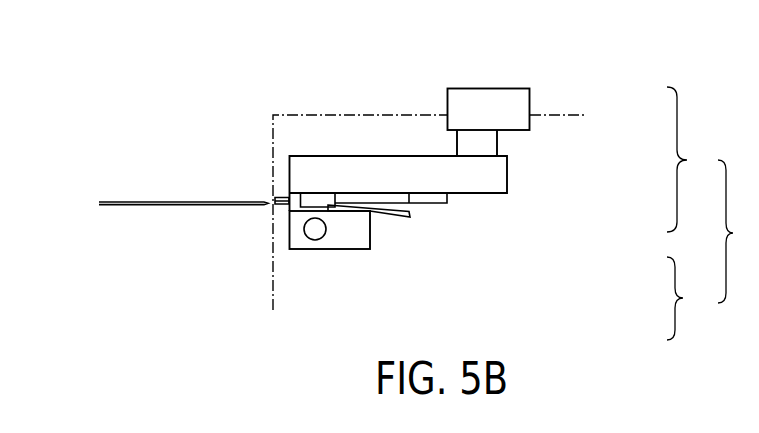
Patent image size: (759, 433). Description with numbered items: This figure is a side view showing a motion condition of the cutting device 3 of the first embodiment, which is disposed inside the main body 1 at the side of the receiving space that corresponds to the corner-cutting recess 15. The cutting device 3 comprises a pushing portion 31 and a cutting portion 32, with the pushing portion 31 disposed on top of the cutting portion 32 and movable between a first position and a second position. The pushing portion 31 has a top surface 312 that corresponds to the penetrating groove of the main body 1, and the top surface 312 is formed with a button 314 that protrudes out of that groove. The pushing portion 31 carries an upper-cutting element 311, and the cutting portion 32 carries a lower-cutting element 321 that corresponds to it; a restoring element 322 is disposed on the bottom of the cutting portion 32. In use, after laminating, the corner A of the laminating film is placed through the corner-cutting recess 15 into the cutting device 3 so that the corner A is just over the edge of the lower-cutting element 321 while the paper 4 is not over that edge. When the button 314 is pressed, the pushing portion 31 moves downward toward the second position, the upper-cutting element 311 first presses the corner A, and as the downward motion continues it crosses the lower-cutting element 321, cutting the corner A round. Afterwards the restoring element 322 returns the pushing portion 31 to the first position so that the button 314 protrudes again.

The main body 1 is at (323, 115).
The paper 4 is at (183, 203).
The corner A is at (262, 199).
The corner-cutting recess 15 is at (275, 203).
The cutting device 3 is at (735, 231).
The pushing portion 31 is at (690, 159).
The upper-cutting element 311 is at (447, 199).
The top surface 312 is at (418, 156).
The button 314 is at (522, 119).
The cutting portion 32 is at (690, 298).
The lower-cutting element 321 is at (397, 214).
The restoring element 322 is at (318, 238).